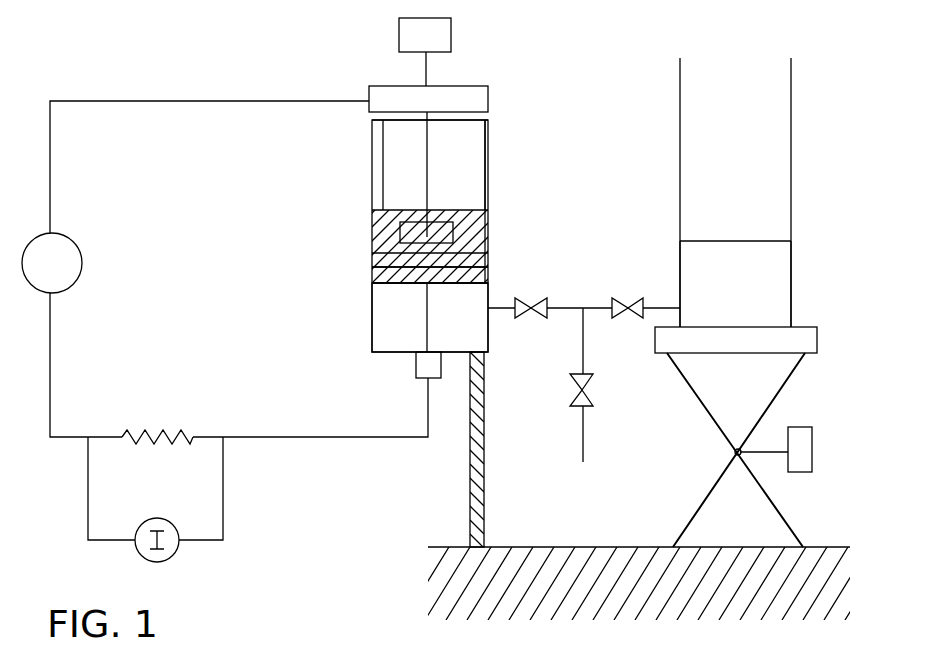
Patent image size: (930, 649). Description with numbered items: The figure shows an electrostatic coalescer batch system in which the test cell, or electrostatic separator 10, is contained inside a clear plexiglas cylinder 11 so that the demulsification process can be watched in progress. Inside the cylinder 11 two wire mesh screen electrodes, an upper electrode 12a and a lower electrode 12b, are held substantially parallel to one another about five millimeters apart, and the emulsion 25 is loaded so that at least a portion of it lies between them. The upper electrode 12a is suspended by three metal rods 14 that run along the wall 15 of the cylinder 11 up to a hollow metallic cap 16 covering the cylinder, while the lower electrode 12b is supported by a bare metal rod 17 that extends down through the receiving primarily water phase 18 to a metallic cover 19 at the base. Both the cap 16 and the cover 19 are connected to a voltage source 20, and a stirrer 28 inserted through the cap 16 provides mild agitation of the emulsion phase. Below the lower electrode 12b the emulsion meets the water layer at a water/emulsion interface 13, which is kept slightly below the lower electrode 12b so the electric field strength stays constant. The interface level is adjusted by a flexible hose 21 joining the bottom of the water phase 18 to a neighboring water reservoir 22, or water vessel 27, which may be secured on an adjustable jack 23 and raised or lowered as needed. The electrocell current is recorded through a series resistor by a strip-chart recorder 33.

The electrostatic separator 10 is at (488, 124).
The plexiglas cylinder 11 is at (488, 147).
The upper electrode 12a is at (402, 253).
The lower electrode 12b is at (397, 272).
The water/emulsion interface 13 is at (408, 285).
The metal rods 14 is at (383, 183).
The wall 15 is at (485, 172).
The hollow metallic cap 16 is at (393, 90).
The bare metal rod 17 is at (430, 315).
The primarily water phase 18 is at (458, 300).
The metallic cover 19 is at (427, 367).
The voltage source 20 is at (63, 237).
The flexible hose 21 is at (588, 304).
The water reservoir 22 is at (780, 287).
The adjustable jack 23 is at (777, 403).
The emulsion 25 is at (452, 258).
The water vessel 27 is at (791, 111).
The stirrer 28 is at (458, 33).
The strip-chart recorder 33 is at (163, 560).